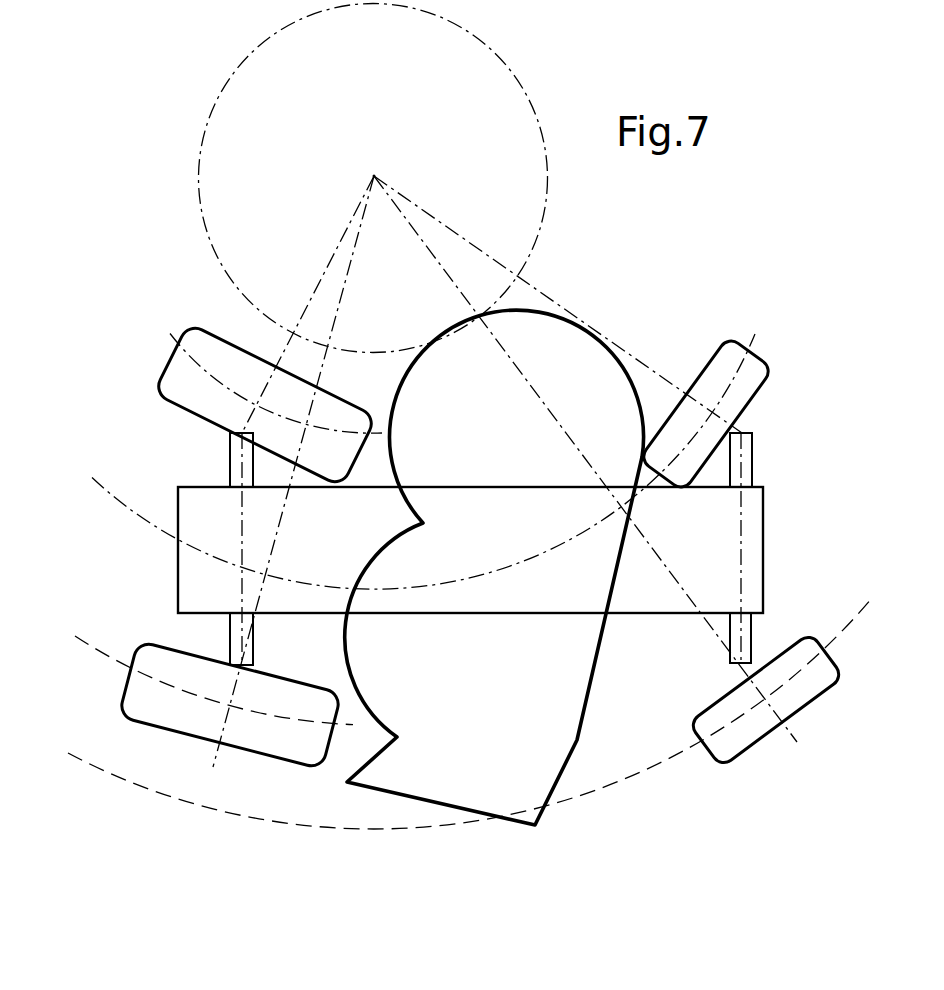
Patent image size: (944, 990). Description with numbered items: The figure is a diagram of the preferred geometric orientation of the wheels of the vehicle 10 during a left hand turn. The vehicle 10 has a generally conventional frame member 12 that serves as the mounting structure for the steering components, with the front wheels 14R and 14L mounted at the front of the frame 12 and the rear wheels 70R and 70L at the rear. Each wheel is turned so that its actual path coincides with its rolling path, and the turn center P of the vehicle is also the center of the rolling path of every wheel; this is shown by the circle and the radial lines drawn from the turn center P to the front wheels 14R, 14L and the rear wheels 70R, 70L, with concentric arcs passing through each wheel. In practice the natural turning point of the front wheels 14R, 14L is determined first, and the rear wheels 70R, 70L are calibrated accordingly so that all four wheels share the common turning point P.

The turn center P is at (374, 176).
The vehicle 10 is at (440, 560).
The frame member 12 is at (778, 547).
The front wheel 14L is at (755, 366).
The front wheel 14R is at (735, 753).
The rear wheel 70L is at (176, 364).
The rear wheel 70R is at (122, 695).